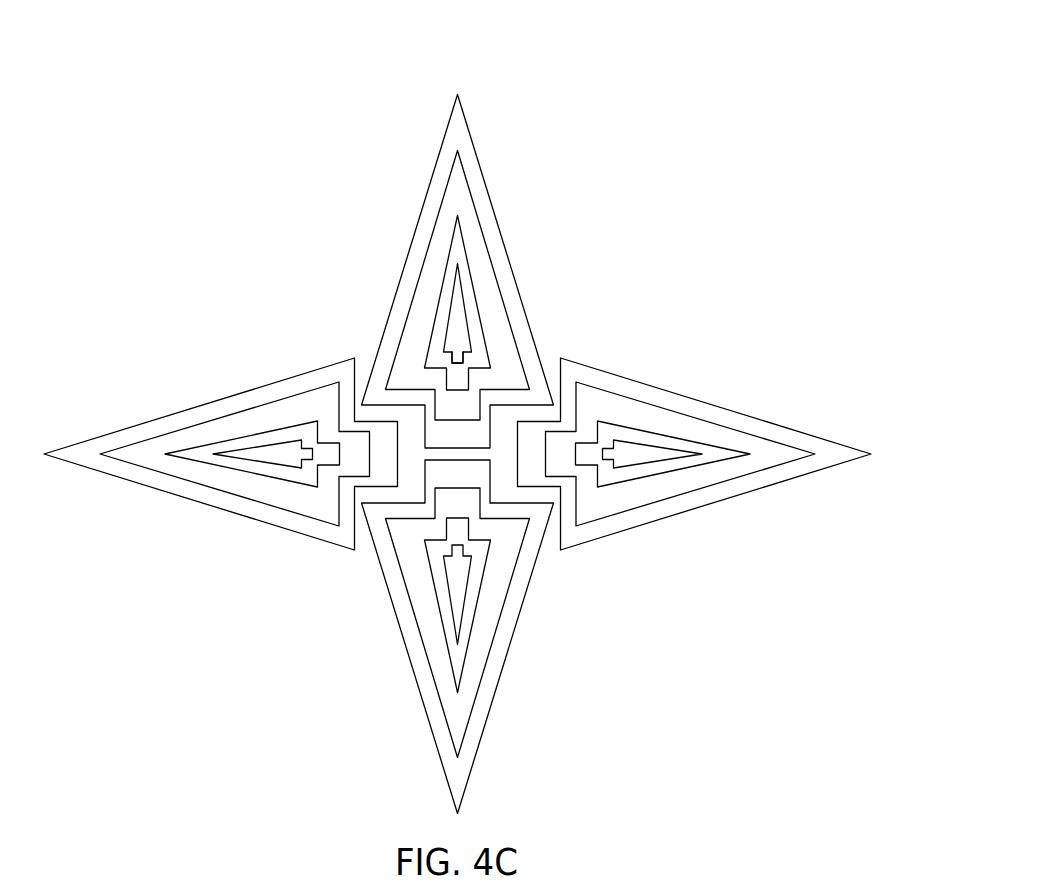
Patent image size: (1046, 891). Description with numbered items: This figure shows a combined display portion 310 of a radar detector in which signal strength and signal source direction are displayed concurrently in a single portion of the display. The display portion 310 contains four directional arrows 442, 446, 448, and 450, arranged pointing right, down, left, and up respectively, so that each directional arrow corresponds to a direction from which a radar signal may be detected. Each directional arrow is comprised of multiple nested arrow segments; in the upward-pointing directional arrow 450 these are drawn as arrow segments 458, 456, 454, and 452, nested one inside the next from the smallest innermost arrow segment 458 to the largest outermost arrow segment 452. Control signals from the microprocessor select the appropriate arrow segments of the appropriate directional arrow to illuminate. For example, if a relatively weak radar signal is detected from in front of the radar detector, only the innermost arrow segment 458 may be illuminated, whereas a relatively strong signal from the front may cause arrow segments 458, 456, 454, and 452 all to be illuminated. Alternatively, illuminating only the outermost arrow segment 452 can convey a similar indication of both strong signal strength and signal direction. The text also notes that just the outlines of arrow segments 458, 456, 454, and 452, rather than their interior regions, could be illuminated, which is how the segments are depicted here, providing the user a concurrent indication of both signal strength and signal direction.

The antenna element 310 is at (609, 121).
The directional arrow 442 is at (717, 501).
The directional arrow 446 is at (507, 657).
The directional arrow 448 is at (142, 425).
The directional arrow 450 is at (438, 155).
The arrow segment 452 is at (478, 198).
The arrow segment 454 is at (472, 250).
The arrow segment 456 is at (467, 292).
The arrow segment 458 is at (460, 337).